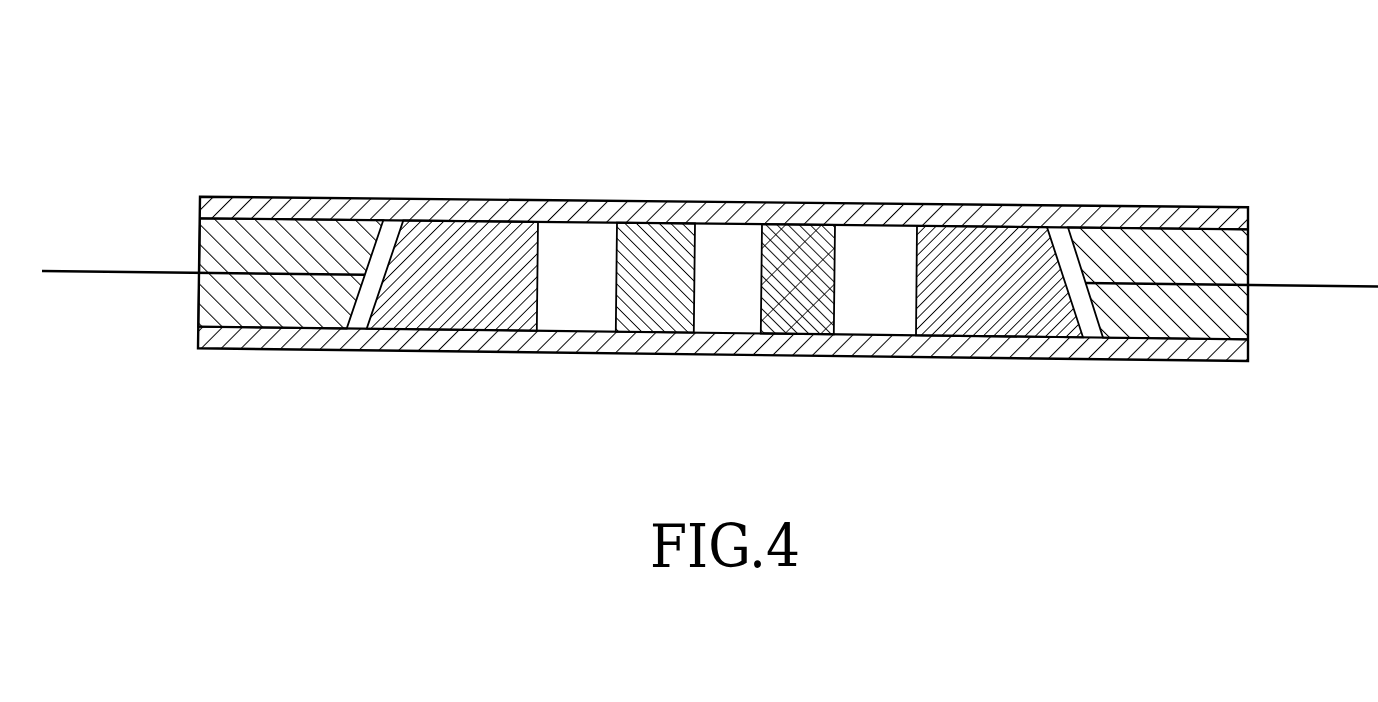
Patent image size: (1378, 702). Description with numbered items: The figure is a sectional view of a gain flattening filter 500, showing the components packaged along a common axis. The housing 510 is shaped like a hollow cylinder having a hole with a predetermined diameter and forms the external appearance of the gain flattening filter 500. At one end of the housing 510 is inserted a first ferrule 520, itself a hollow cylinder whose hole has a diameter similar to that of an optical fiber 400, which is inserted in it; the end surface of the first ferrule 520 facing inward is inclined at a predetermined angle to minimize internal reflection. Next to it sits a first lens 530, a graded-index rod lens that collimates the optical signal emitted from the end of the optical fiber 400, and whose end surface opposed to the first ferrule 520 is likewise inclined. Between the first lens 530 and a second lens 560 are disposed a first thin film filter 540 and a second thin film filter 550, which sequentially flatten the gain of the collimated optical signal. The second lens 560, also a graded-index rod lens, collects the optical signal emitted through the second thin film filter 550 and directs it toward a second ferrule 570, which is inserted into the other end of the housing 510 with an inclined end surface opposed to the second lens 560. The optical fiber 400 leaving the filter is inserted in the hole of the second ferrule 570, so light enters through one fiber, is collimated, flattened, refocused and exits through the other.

The optical fiber 400 is at (120, 270).
The gain flattening filter 500 is at (247, 177).
The housing 510 is at (728, 213).
The first ferrule 520 is at (313, 233).
The first lens 530 is at (470, 238).
The first thin film filter 540 is at (658, 235).
The second thin film filter 550 is at (805, 242).
The second lens 560 is at (990, 240).
The second ferrule 570 is at (1158, 243).